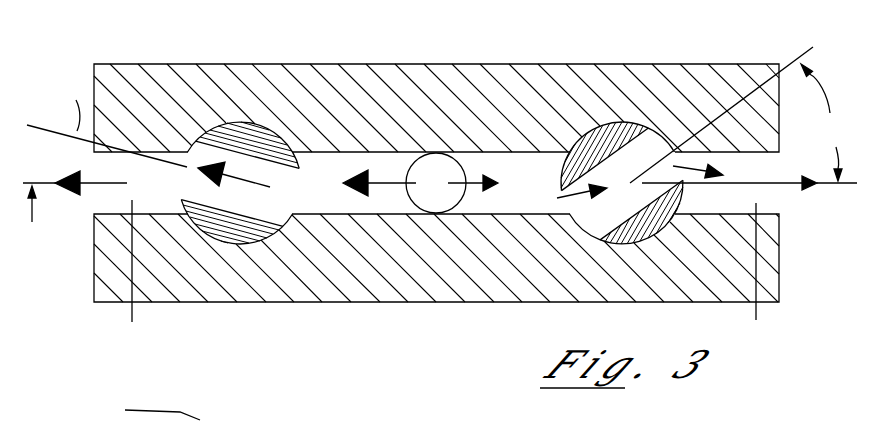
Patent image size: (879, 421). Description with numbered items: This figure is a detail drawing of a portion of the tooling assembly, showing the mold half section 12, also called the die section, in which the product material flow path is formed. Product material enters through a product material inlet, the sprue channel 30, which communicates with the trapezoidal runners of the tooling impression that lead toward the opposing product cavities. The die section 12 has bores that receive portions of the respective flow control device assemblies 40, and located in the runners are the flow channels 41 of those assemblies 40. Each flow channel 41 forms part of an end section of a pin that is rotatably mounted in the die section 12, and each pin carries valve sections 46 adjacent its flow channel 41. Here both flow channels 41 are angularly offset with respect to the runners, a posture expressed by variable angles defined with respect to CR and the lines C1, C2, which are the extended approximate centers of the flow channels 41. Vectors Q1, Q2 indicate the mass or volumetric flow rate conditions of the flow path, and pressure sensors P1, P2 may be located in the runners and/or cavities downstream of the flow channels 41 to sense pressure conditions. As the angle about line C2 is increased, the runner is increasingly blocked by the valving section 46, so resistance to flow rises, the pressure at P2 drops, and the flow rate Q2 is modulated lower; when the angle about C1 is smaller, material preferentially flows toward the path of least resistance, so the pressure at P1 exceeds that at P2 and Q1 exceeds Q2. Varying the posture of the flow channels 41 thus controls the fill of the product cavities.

The mold half section 12 is at (154, 49).
The sprue channel 30 is at (440, 163).
The flow control device assembly 40 is at (264, 110).
The flow channel 41 is at (209, 152).
The valve section 46 is at (565, 195).
The line C1 is at (42, 116).
The line C2 is at (787, 63).
The pressure sensor P1 is at (124, 280).
The pressure sensor P2 is at (755, 279).
The vector Q1 is at (75, 214).
The vector Q2 is at (790, 183).